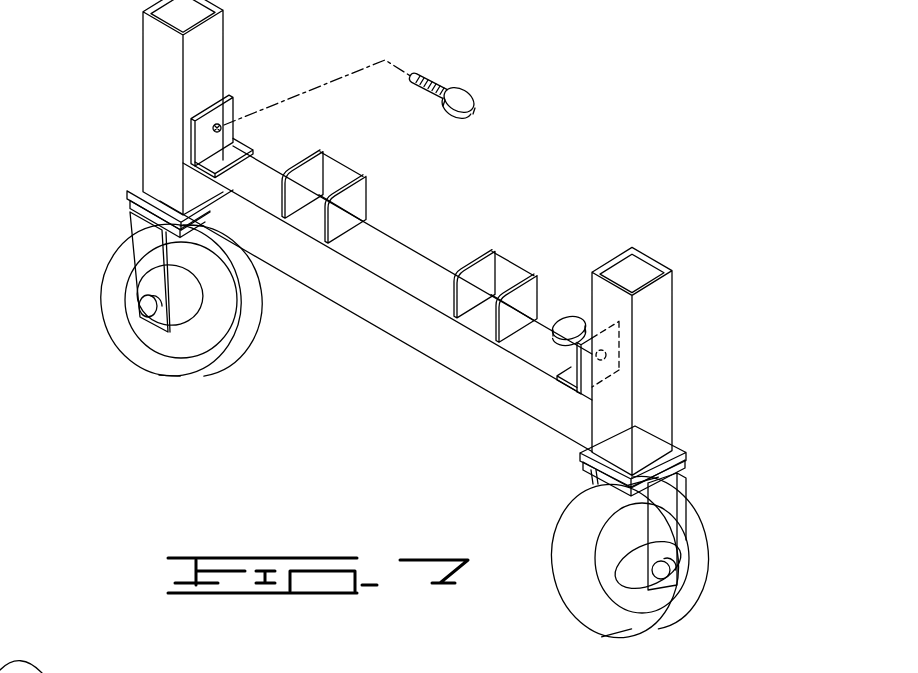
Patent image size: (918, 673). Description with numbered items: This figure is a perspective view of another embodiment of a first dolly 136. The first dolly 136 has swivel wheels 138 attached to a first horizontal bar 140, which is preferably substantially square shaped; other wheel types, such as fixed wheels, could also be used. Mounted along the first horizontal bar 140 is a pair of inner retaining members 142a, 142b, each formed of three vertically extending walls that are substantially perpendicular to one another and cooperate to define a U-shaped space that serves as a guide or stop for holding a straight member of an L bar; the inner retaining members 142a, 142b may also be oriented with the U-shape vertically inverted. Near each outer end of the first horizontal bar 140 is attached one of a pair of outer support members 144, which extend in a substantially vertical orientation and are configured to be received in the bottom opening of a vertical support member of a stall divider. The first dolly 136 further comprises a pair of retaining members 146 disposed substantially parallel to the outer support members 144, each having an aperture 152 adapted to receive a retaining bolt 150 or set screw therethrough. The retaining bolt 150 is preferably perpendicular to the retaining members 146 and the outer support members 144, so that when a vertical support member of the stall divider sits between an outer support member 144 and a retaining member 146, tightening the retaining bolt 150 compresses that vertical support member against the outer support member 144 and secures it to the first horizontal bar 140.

The first dolly 136 is at (683, 113).
The swivel wheels 138 is at (128, 337).
The first horizontal bar 140 is at (387, 333).
The inner retaining member 142a is at (337, 166).
The inner retaining member 142b is at (497, 255).
The outer support members 144 is at (143, 53).
The retaining members 146 is at (193, 143).
The retaining bolt 150 is at (470, 92).
The aperture 152 is at (221, 124).